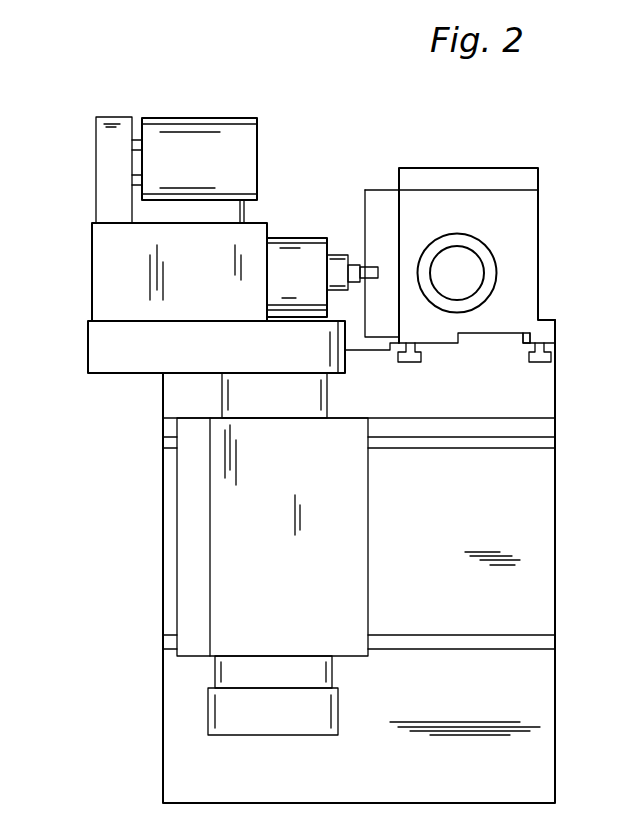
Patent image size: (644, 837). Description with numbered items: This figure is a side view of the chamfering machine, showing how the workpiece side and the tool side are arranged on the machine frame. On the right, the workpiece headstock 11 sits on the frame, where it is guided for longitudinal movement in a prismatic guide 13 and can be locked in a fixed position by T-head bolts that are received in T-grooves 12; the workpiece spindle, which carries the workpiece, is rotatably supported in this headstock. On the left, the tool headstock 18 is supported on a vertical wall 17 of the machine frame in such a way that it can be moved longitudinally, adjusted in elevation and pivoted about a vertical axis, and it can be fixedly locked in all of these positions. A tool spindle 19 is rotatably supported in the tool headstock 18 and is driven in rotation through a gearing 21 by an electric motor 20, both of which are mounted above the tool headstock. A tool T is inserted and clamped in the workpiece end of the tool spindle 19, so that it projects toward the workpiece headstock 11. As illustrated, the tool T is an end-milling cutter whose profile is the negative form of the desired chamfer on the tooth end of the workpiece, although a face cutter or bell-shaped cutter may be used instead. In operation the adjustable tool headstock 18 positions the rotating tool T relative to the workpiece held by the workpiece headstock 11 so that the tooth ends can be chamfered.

The workpiece headstock 11 is at (532, 203).
The T-grooves 12 is at (545, 358).
The prismatic guide 13 is at (528, 338).
The vertical wall 17 is at (526, 611).
The tool headstock 18 is at (292, 250).
The tool spindle 19 is at (340, 262).
The tool T is at (370, 271).
The electric motor 20 is at (243, 137).
The gearing 21 is at (105, 168).